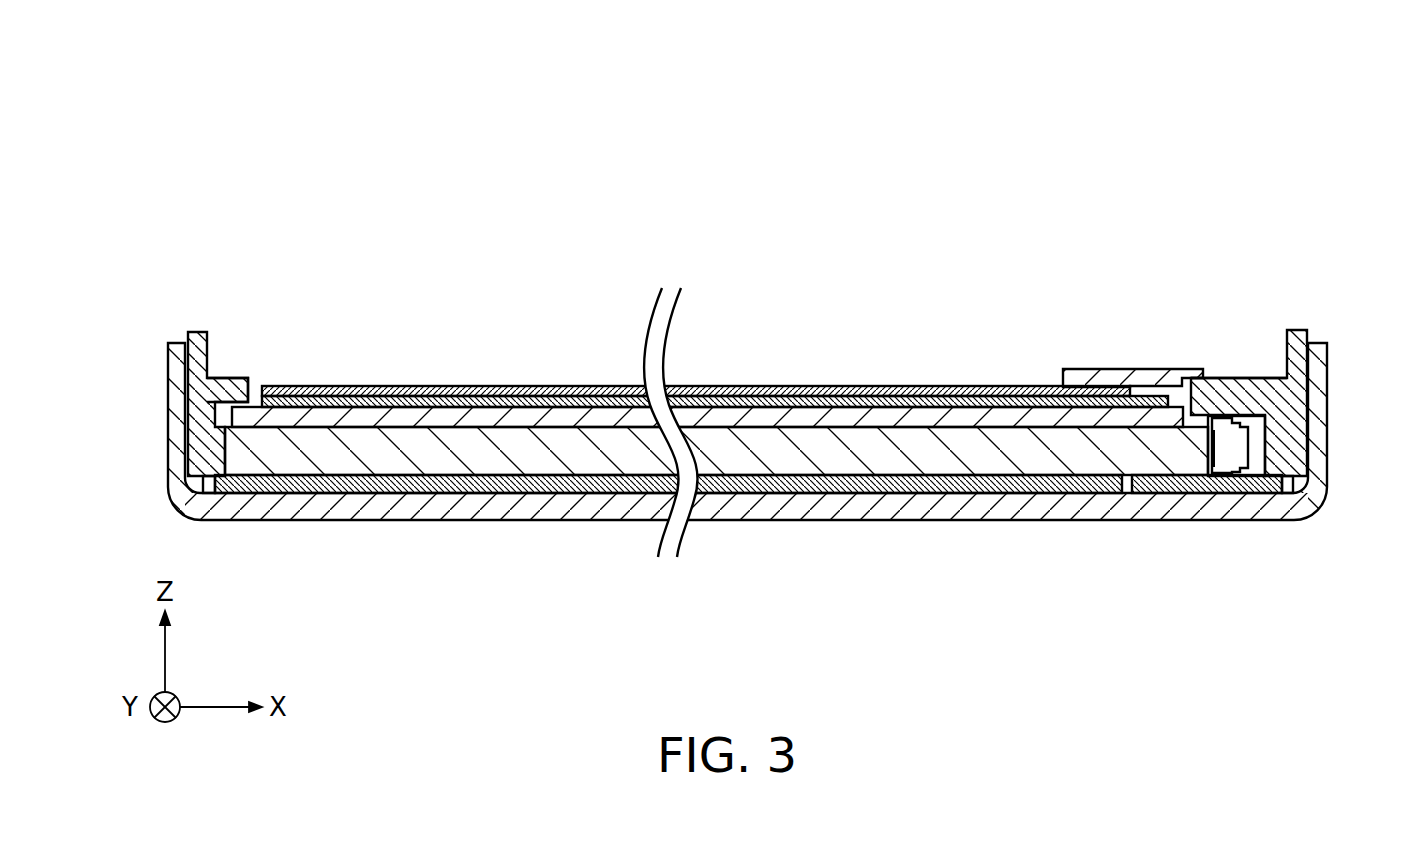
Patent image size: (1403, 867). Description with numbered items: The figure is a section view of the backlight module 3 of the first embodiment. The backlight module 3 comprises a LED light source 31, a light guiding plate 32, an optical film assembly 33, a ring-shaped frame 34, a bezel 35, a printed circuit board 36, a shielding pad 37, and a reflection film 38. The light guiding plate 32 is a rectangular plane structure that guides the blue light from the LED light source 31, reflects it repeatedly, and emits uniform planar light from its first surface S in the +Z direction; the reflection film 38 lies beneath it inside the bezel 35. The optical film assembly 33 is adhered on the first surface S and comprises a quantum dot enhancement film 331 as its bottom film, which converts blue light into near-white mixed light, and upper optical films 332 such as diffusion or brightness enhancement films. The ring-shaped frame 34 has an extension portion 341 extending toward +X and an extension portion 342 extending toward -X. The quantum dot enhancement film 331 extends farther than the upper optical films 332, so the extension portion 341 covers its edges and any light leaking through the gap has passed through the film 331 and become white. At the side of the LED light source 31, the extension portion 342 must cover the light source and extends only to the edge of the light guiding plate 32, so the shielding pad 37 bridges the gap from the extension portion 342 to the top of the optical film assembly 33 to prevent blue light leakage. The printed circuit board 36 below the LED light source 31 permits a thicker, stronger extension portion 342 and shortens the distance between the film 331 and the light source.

The backlight module 3 is at (784, 325).
The LED light source 31 is at (1227, 447).
The light guiding plate 32 is at (475, 453).
The optical film assembly 33 is at (715, 336).
The quantum dot enhancement film 331 is at (865, 303).
The upper optical films 332 is at (836, 400).
The ring-shaped frame 34 is at (741, 357).
The extension portion 341 is at (228, 390).
The extension portion 342 is at (1215, 392).
The bezel 35 is at (1322, 420).
The printed circuit board 36 is at (1262, 488).
The shielding pad 37 is at (1130, 378).
The reflection film 38 is at (558, 487).
The first surface S is at (970, 427).